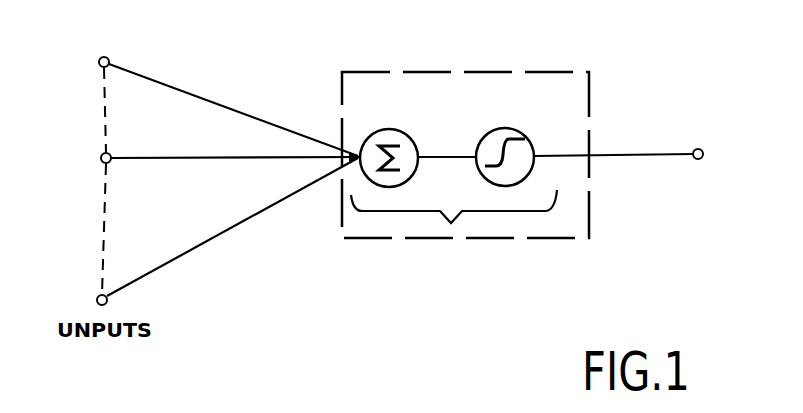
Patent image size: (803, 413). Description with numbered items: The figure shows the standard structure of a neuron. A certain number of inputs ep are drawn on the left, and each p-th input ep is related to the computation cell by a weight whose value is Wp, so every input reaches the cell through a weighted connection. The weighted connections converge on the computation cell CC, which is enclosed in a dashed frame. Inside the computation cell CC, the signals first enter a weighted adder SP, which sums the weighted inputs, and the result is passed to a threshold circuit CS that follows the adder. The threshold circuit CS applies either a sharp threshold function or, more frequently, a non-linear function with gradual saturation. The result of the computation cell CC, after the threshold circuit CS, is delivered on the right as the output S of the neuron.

The inputs ep is at (78, 181).
The weight Wp is at (234, 180).
The weighted adder SP is at (390, 128).
The threshold circuit CS is at (507, 127).
The computation cell CC is at (475, 228).
The output S is at (635, 158).